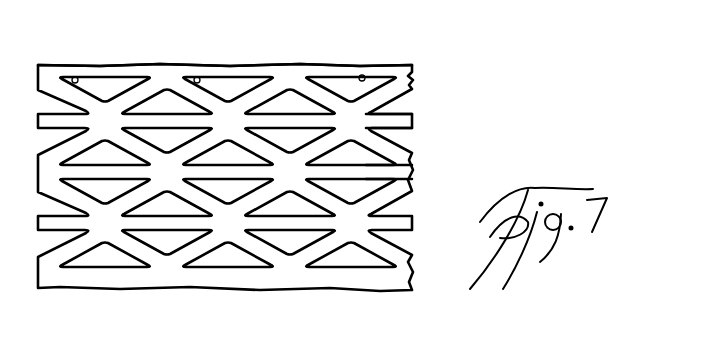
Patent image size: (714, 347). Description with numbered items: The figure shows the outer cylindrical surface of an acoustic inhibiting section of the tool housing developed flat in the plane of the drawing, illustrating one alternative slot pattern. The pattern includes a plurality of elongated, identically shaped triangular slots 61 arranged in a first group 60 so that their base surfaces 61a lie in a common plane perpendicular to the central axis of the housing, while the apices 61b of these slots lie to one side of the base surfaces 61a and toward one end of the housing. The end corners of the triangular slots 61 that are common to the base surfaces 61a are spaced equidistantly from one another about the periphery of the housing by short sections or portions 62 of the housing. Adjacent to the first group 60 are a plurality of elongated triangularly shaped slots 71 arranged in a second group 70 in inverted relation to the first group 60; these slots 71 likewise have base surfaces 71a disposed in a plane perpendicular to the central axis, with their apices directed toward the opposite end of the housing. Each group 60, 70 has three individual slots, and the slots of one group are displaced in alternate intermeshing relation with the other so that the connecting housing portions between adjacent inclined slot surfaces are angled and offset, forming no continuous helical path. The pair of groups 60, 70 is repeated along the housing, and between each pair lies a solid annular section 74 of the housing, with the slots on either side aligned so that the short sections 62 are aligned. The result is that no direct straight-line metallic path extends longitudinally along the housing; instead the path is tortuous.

The first group 60 is at (415, 72).
The triangular slots 61 is at (130, 76).
The base surfaces 61a is at (75, 77).
The apices 61b is at (103, 98).
The short sections or portions 62 is at (163, 76).
The second group 70 is at (412, 128).
The triangularly shaped slots 71 is at (146, 96).
The base surfaces 71a is at (378, 163).
The solid annular section 74 is at (393, 168).